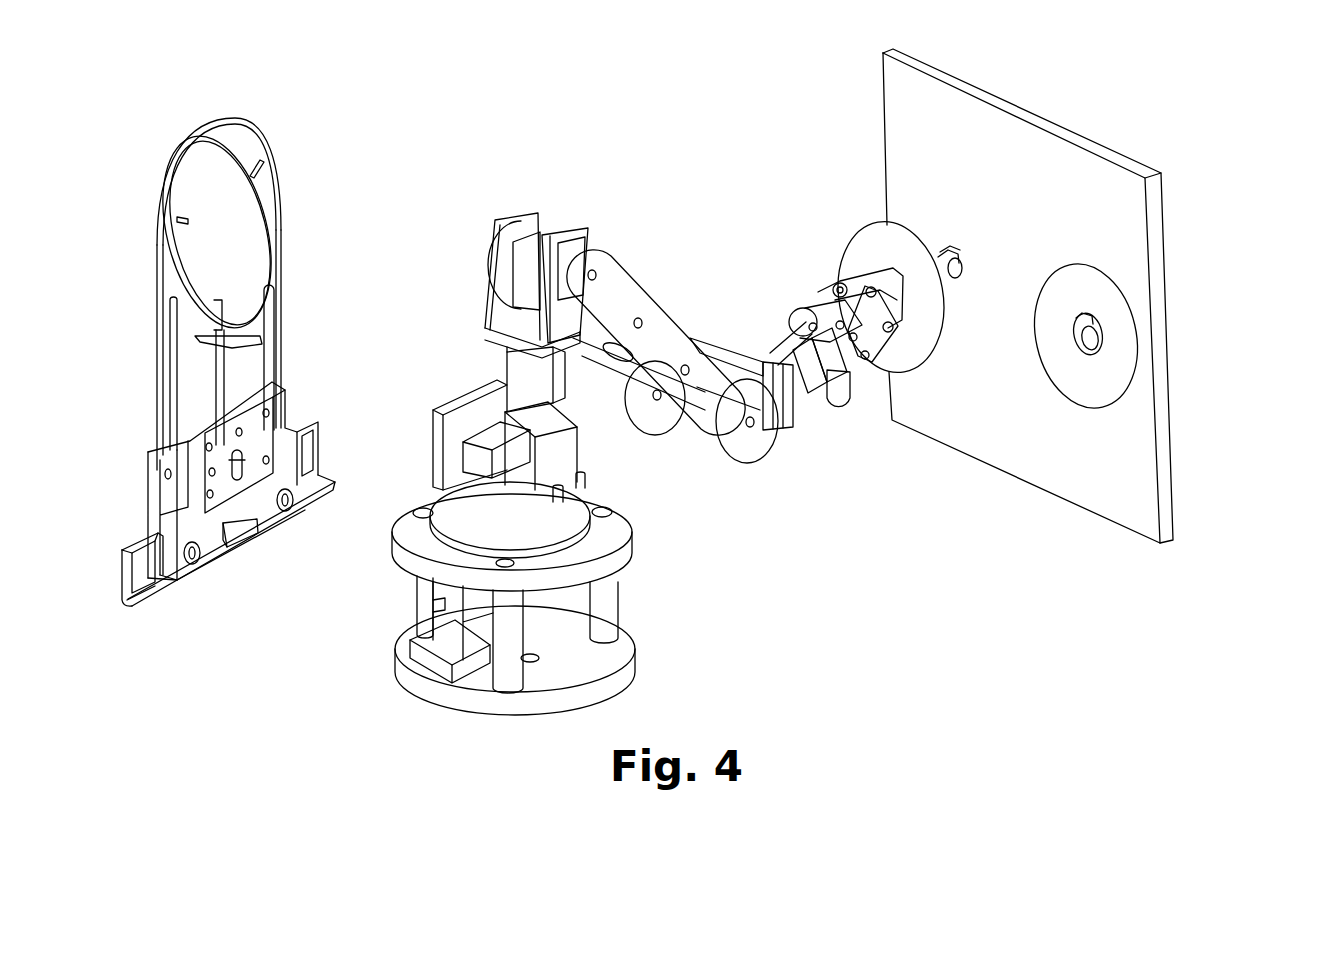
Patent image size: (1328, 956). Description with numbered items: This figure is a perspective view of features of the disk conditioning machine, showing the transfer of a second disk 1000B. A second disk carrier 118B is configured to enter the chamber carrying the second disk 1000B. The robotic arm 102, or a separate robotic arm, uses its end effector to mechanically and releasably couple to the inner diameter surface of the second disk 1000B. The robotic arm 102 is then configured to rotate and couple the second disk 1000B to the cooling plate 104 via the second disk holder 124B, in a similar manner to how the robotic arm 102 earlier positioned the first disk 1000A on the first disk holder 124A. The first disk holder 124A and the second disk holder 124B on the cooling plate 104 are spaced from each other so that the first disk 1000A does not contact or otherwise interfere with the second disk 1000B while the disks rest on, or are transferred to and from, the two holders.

The second disk carrier 118B is at (276, 103).
The robotic arm 102 is at (535, 183).
The cooling plate 104 is at (1050, 50).
The second disk holder 124B is at (942, 258).
The second disk 1000B is at (855, 258).
The first disk holder 124A is at (1098, 325).
The first disk 1000A is at (1115, 377).